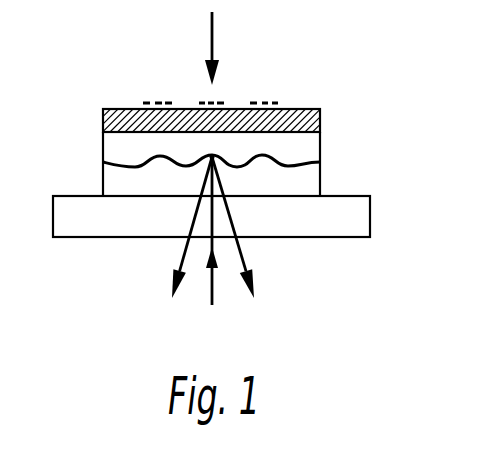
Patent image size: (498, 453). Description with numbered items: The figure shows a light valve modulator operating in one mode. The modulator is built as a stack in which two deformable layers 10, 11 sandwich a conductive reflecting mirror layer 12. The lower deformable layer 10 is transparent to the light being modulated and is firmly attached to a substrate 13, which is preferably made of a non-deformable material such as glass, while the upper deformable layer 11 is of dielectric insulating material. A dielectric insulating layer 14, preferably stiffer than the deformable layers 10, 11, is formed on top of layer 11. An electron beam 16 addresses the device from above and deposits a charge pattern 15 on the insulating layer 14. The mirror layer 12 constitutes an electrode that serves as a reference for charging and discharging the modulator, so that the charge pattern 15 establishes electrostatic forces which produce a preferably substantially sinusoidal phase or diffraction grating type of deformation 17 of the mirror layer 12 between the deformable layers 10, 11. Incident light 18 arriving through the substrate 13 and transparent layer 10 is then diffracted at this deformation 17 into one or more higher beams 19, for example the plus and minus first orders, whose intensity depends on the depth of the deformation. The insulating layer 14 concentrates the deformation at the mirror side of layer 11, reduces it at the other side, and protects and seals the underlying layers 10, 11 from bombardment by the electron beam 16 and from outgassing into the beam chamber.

The deformable layer 10 is at (311, 183).
The deformable layer 11 is at (312, 147).
The conductive reflecting mirror layer 12 is at (103, 162).
The substrate 13 is at (358, 221).
The dielectric insulating layer 14 is at (306, 111).
The charge pattern 15 is at (202, 104).
The electron beam 16 is at (210, 24).
The deformation 17 is at (212, 157).
The incident light 18 is at (214, 290).
The higher beams 19 is at (181, 261).